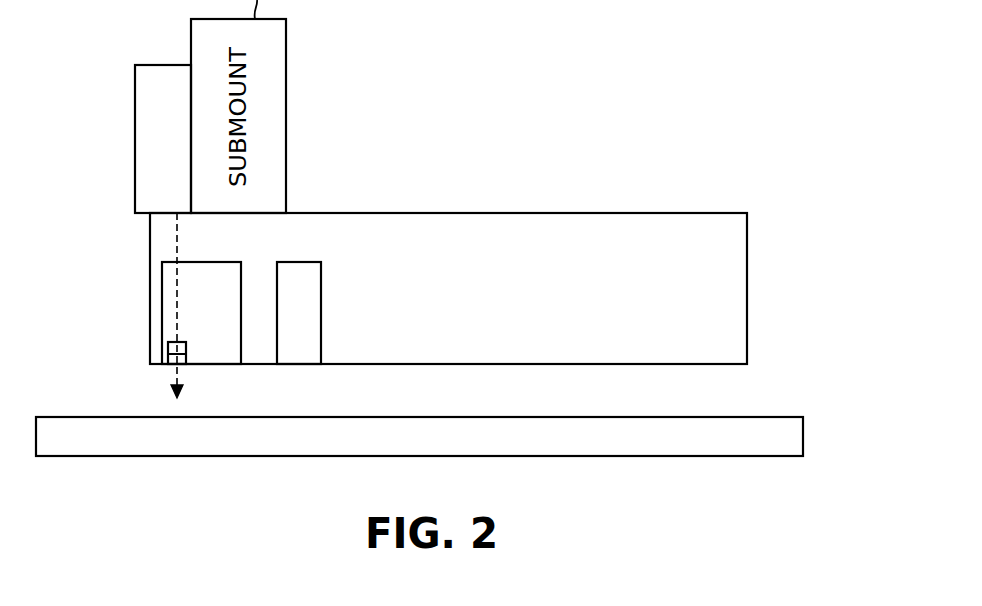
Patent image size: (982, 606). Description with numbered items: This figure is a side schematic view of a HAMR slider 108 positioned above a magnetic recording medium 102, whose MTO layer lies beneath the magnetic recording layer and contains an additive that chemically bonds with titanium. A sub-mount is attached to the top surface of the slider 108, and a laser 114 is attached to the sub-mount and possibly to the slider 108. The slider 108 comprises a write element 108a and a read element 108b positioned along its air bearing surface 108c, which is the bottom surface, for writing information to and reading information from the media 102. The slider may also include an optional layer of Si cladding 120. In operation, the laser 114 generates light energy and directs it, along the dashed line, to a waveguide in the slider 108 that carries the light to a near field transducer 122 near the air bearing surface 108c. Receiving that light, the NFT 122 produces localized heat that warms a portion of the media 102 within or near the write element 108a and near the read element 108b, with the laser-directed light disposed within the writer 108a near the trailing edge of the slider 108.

The magnetic recording medium 102 is at (803, 434).
The slider 108 is at (663, 213).
The write element 108a is at (210, 262).
The read element 108b is at (310, 262).
The air bearing surface 108c is at (732, 364).
The laser 114 is at (148, 65).
The Si cladding 120 is at (179, 364).
The near field transducer 122 is at (168, 346).